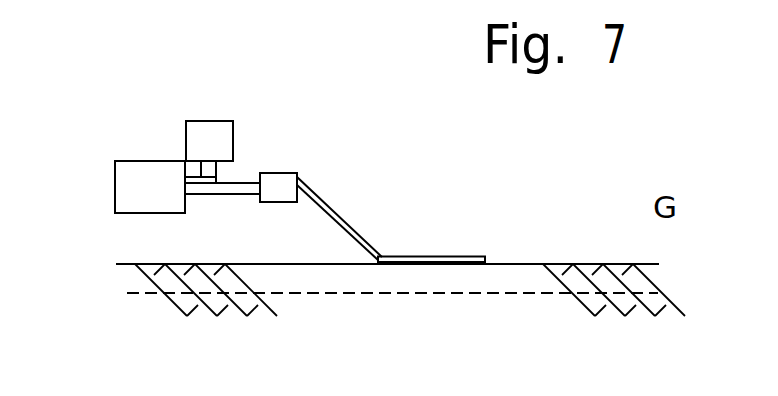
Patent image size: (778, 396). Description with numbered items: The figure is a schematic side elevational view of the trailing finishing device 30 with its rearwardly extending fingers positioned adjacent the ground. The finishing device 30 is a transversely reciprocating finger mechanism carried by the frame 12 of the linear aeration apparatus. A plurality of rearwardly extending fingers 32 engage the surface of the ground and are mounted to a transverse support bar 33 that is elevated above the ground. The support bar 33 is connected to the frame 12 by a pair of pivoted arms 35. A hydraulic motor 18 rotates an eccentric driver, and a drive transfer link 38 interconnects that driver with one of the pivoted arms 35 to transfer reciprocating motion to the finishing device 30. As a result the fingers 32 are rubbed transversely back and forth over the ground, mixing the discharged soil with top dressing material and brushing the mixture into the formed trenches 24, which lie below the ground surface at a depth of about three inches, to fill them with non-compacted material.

The frame 12 is at (128, 161).
The hydraulic motor 18 is at (211, 121).
The drive transfer link 38 is at (217, 178).
The pivoted arms 35 is at (207, 194).
The transverse support bar 33 is at (299, 185).
The finishing device 30 is at (416, 200).
The fingers 32 is at (447, 257).
The trench 24 is at (392, 295).